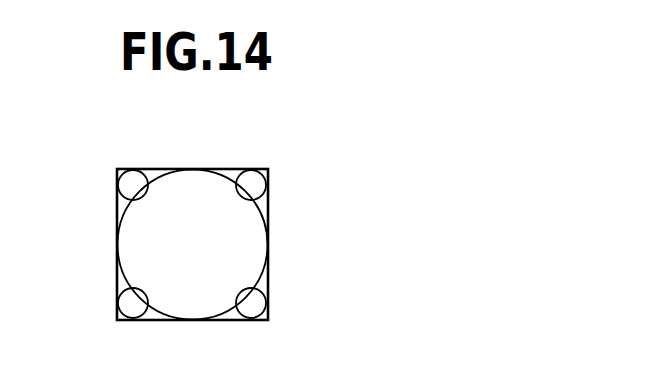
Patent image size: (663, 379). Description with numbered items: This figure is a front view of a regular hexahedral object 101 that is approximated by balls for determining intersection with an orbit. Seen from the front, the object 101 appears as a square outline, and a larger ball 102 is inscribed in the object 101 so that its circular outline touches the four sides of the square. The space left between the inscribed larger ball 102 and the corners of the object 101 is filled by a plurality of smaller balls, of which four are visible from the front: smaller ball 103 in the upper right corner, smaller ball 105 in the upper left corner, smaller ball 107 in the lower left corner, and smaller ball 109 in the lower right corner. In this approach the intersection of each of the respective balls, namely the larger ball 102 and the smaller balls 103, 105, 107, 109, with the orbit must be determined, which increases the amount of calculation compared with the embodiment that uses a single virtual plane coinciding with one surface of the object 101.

The regular hexahedral object 101 is at (165, 170).
The larger ball 102 is at (252, 246).
The smaller ball 103 is at (263, 183).
The smaller ball 105 is at (126, 185).
The smaller ball 107 is at (128, 302).
The smaller ball 109 is at (252, 305).